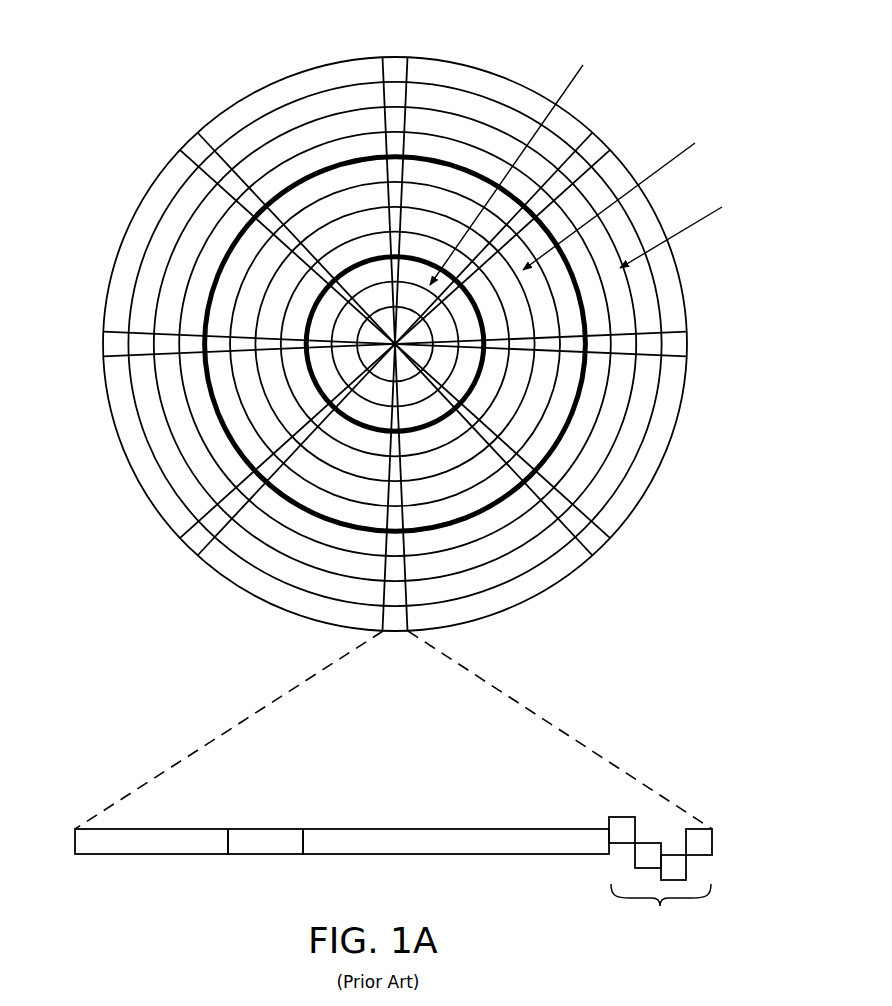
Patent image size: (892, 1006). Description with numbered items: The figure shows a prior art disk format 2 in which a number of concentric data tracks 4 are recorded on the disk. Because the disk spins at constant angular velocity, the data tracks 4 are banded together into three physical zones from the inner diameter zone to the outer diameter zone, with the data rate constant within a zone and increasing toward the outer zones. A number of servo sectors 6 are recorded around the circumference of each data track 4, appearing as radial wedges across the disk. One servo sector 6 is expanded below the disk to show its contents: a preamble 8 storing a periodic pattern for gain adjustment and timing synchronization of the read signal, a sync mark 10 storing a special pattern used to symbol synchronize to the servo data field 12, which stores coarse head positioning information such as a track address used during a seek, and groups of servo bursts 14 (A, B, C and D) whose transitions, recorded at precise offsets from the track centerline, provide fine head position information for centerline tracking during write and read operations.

The disk format 2 is at (183, 62).
The data tracks 4 is at (495, 115).
The servo sectors 6 is at (394, 65).
The preamble 8 is at (133, 855).
The sync mark 10 is at (263, 855).
The servo data field 12 is at (446, 855).
The servo bursts 14 is at (600, 803).